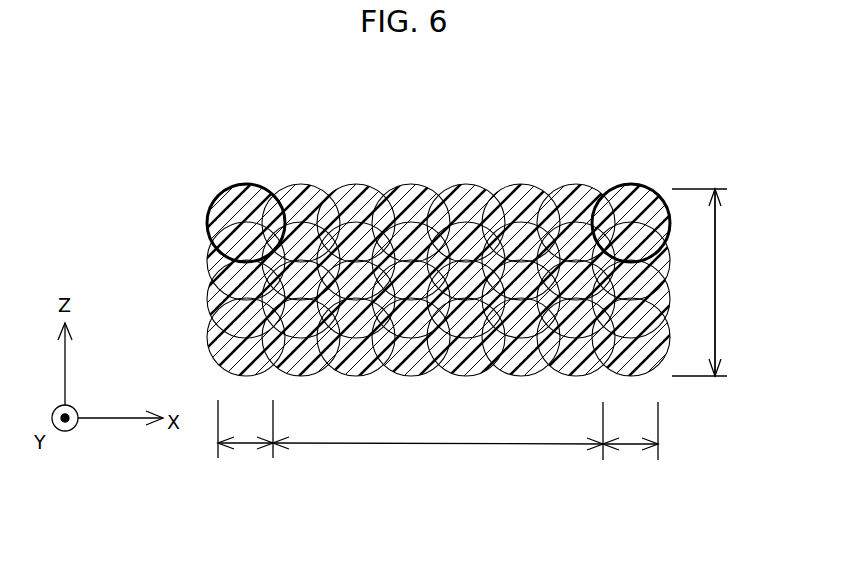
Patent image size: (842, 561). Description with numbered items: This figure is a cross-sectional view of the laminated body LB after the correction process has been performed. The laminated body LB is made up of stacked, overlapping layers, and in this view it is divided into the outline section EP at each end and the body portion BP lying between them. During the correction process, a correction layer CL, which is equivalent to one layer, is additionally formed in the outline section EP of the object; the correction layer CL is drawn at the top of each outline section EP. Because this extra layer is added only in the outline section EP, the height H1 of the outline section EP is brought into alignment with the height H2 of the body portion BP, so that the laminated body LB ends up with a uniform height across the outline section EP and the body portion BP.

The laminated body LB is at (162, 206).
The correction layer CL is at (243, 184).
The outline section EP is at (438, 430).
The body portion BP is at (438, 429).
The height of the outline section H1 is at (726, 282).
The height of the body portion H2 is at (748, 282).